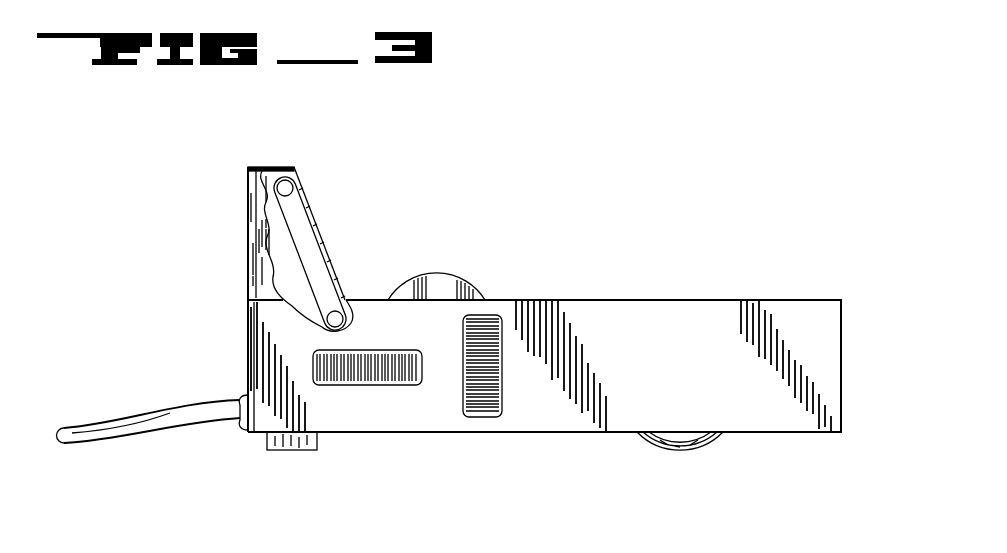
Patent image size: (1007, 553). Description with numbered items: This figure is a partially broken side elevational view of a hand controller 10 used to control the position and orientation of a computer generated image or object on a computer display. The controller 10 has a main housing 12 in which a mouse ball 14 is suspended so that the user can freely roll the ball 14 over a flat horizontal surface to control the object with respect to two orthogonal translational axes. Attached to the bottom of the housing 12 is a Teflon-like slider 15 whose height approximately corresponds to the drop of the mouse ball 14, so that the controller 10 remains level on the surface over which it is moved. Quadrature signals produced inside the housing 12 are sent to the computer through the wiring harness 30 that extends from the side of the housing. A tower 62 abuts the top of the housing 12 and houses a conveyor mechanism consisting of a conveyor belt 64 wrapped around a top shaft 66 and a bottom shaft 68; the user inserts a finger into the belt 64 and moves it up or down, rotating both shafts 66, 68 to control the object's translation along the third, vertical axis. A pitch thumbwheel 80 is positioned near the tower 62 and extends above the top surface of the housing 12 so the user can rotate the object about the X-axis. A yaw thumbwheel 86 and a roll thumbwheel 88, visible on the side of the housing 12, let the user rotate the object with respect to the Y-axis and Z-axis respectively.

The hand controller 10 is at (666, 300).
The main housing 12 is at (842, 357).
The mouse ball 14 is at (695, 449).
The slider 15 is at (308, 450).
The wiring harness 30 is at (122, 436).
The tower 62 is at (257, 222).
The conveyor belt 64 is at (298, 247).
The top shaft 66 is at (288, 186).
The bottom shaft 68 is at (344, 318).
The pitch thumbwheel 80 is at (457, 284).
The yaw thumbwheel 86 is at (390, 387).
The roll thumbwheel 88 is at (493, 420).